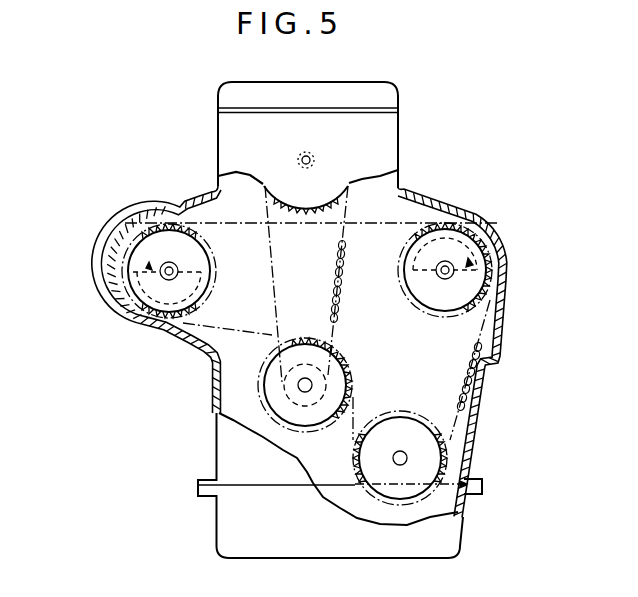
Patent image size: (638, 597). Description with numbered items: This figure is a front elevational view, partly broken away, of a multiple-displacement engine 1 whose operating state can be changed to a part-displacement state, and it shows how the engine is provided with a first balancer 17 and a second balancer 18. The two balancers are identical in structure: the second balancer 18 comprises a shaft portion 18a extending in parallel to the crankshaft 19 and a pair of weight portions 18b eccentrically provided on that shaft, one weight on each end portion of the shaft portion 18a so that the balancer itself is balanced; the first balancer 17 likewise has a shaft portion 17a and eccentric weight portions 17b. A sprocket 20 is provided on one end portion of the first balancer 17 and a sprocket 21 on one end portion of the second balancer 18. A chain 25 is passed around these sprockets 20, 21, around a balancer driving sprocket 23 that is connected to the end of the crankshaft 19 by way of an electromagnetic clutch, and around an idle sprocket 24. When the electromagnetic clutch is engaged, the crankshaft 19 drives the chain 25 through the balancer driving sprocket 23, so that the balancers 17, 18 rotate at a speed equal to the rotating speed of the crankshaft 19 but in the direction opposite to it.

The engine 1 is at (407, 112).
The first balancer 17 is at (117, 233).
The shaft portion 17a is at (176, 268).
The weight portion 17b is at (200, 293).
The second balancer 18 is at (503, 243).
The shaft portion 18a is at (437, 266).
The weight portion 18b is at (492, 223).
The crankshaft 19 is at (299, 389).
The sprocket 20 is at (169, 210).
The sprocket 21 is at (452, 215).
The balancer driving sprocket 23 is at (345, 368).
The idle sprocket 24 is at (402, 426).
The chain 25 is at (485, 383).